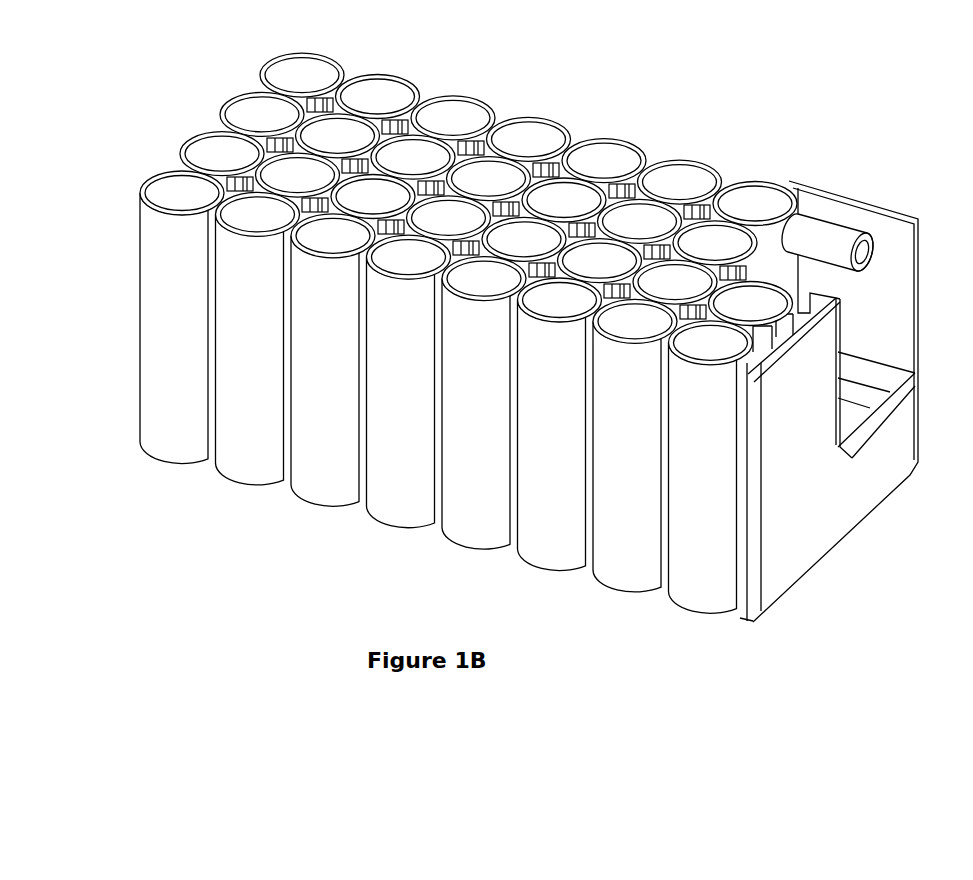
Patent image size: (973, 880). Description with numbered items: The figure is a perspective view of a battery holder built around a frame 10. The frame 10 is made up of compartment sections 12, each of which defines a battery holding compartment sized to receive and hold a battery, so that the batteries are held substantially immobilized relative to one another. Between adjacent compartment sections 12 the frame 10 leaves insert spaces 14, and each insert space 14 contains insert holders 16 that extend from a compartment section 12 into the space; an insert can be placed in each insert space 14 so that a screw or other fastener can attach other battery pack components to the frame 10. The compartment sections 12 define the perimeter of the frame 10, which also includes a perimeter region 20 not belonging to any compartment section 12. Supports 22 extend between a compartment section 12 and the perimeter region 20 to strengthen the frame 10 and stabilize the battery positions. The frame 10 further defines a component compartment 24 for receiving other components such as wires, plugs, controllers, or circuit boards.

The frame 10 is at (192, 113).
The compartment section 12 is at (427, 85).
The insert space 14 is at (239, 181).
The insert holder 16 is at (443, 190).
The perimeter region 20 is at (818, 477).
The support 22 is at (778, 343).
The component compartment 24 is at (876, 430).